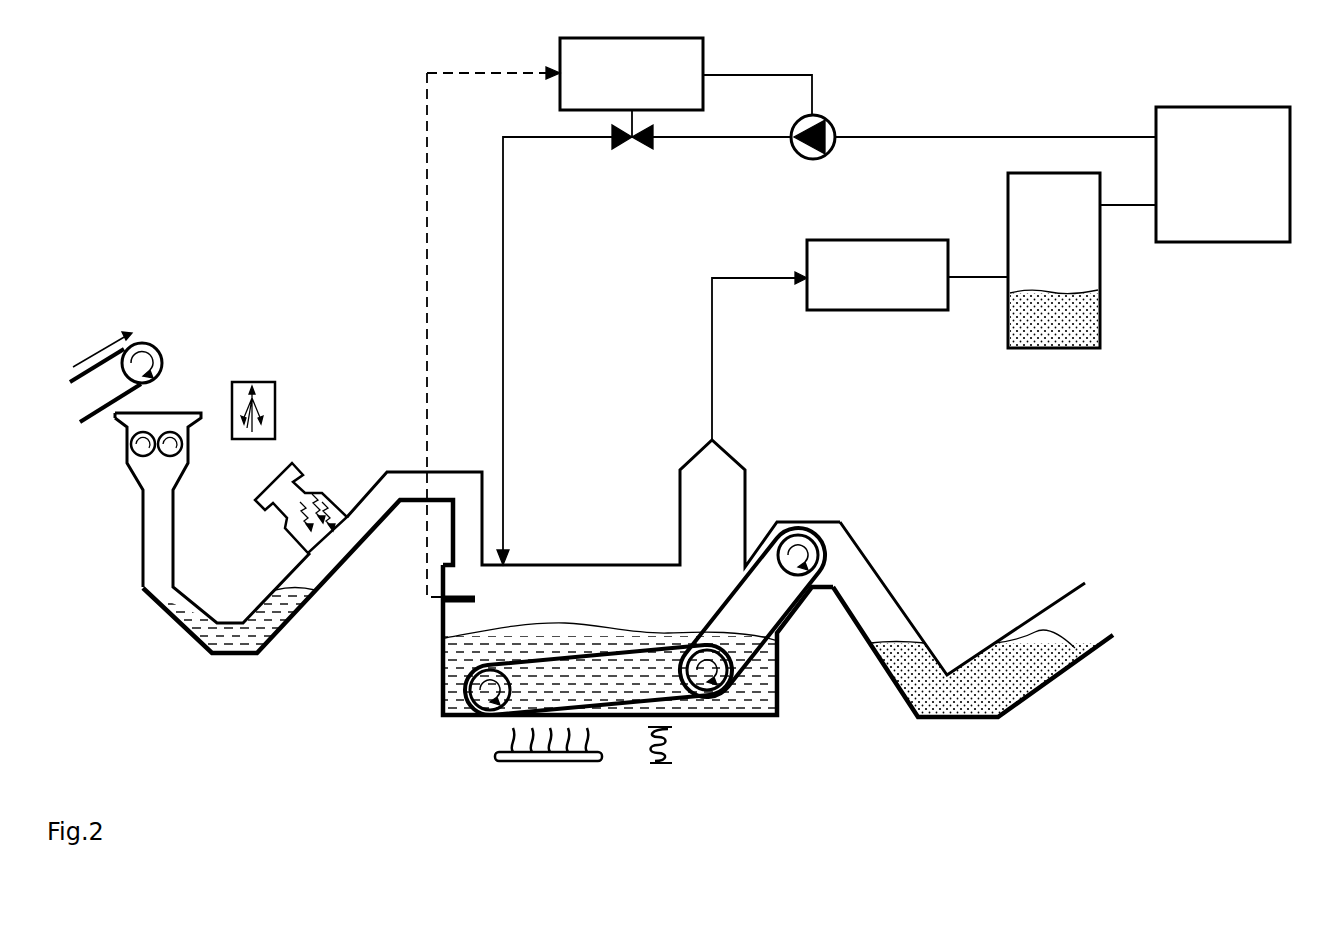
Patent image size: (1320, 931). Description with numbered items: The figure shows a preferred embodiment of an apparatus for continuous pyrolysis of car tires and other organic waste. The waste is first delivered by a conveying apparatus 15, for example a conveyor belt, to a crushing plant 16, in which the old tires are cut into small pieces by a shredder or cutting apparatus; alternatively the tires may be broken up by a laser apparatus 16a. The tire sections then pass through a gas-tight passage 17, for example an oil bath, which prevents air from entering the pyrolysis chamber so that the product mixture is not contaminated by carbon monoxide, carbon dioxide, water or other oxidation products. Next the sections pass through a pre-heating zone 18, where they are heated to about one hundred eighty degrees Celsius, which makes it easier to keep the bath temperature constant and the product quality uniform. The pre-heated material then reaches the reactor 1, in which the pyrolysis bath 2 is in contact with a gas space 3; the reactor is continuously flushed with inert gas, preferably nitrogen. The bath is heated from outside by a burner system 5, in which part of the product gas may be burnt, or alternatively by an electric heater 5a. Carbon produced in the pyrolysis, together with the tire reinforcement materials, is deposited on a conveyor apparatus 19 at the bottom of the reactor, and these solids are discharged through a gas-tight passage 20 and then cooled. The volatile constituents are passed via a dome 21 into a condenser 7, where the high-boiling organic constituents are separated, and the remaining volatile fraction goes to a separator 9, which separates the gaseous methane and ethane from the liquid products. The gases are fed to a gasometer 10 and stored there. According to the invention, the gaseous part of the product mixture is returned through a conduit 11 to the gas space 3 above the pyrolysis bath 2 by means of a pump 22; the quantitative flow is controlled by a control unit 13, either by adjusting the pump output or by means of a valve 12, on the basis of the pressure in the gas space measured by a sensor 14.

The reactor 1 is at (765, 716).
The pyrolysis bath 2 is at (750, 687).
The gas space 3 is at (698, 593).
The burner system 5 is at (547, 763).
The electric heater 5a is at (660, 765).
The condenser 7 is at (878, 312).
The separator 9 is at (1102, 265).
The gasometer 10 is at (1227, 242).
The conduit 11 is at (503, 273).
The valve 12 is at (642, 142).
The control unit 13 is at (705, 60).
The sensor 14 is at (442, 602).
The conveying apparatus 15 is at (142, 340).
The crushing plant 16 is at (138, 467).
The laser apparatus 16a is at (238, 385).
The gas-tight passage 17 is at (190, 627).
The pre-heating zone 18 is at (330, 498).
The conveyor apparatus 19 is at (773, 632).
The gas-tight passage 20 is at (972, 717).
The dome 21 is at (695, 487).
The pump 22 is at (833, 122).